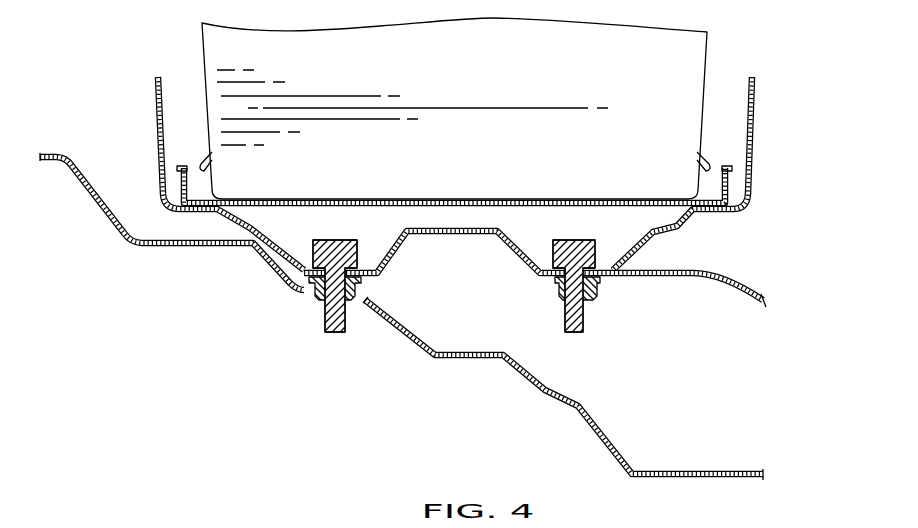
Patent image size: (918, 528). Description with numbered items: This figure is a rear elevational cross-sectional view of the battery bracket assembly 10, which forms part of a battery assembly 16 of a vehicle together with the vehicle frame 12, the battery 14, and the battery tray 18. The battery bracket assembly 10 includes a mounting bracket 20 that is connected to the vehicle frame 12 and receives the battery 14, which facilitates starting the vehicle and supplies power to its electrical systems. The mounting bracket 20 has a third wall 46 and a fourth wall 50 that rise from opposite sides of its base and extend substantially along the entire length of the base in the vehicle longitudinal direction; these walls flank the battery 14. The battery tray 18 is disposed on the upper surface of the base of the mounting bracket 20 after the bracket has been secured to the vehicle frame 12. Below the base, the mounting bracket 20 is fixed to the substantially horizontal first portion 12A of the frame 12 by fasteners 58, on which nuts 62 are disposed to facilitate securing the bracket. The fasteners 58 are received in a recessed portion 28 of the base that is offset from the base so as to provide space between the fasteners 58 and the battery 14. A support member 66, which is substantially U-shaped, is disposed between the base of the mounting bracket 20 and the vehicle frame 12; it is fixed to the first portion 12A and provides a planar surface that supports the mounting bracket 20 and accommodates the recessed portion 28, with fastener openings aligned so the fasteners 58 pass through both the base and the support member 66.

The battery bracket assembly 10 is at (474, 137).
The vehicle frame 12 is at (83, 211).
The first portion 12A is at (608, 437).
The battery 14 is at (705, 58).
The battery assembly 16 is at (401, 316).
The battery tray 18 is at (183, 185).
The mounting bracket 20 is at (454, 173).
The recessed portion 28 is at (470, 234).
The third wall 46 is at (155, 106).
The fourth wall 50 is at (755, 107).
The fasteners 58 is at (324, 320).
The nuts 62 is at (361, 288).
The support member 66 is at (719, 278).